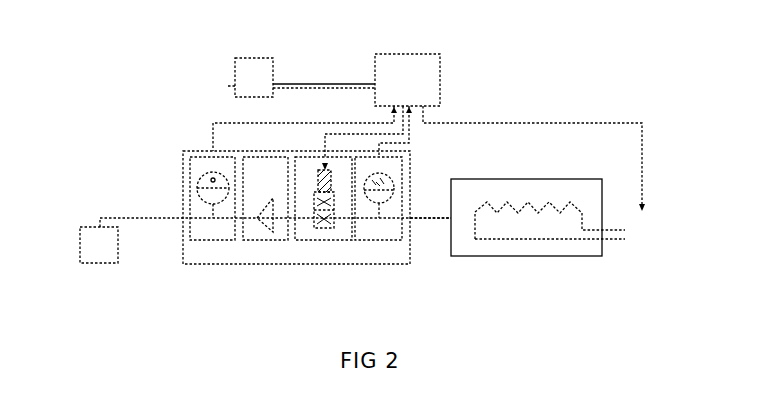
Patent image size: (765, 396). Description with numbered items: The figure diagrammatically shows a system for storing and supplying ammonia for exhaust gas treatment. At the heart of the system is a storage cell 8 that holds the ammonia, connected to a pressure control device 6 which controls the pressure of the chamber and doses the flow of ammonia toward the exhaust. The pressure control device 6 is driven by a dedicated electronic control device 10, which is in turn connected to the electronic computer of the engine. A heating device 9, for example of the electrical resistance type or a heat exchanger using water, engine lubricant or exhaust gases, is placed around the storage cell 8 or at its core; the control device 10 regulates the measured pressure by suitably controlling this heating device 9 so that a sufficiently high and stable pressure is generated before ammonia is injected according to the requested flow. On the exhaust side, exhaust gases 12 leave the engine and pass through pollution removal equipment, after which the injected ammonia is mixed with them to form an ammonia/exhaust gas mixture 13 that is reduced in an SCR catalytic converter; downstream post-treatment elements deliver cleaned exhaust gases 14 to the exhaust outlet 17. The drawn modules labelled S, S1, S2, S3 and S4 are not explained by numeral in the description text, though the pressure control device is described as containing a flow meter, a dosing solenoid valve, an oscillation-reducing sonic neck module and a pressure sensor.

The pressure control device 6 is at (538, 217).
The storage cell 8 is at (99, 245).
The heating device 9 is at (610, 240).
The control device 10 is at (407, 80).
The exhaust gases 12 is at (328, 86).
The ammonia/exhaust gas mixture 13 is at (250, 77).
The cleaned exhaust gases 14 is at (135, 218).
The exhaust outlet 17 is at (420, 218).
The sensor and actuator unit S is at (296, 207).
The pump S1 is at (212, 198).
The check valve S2 is at (265, 198).
The solenoid valve S3 is at (323, 198).
The flow sensor S4 is at (378, 198).